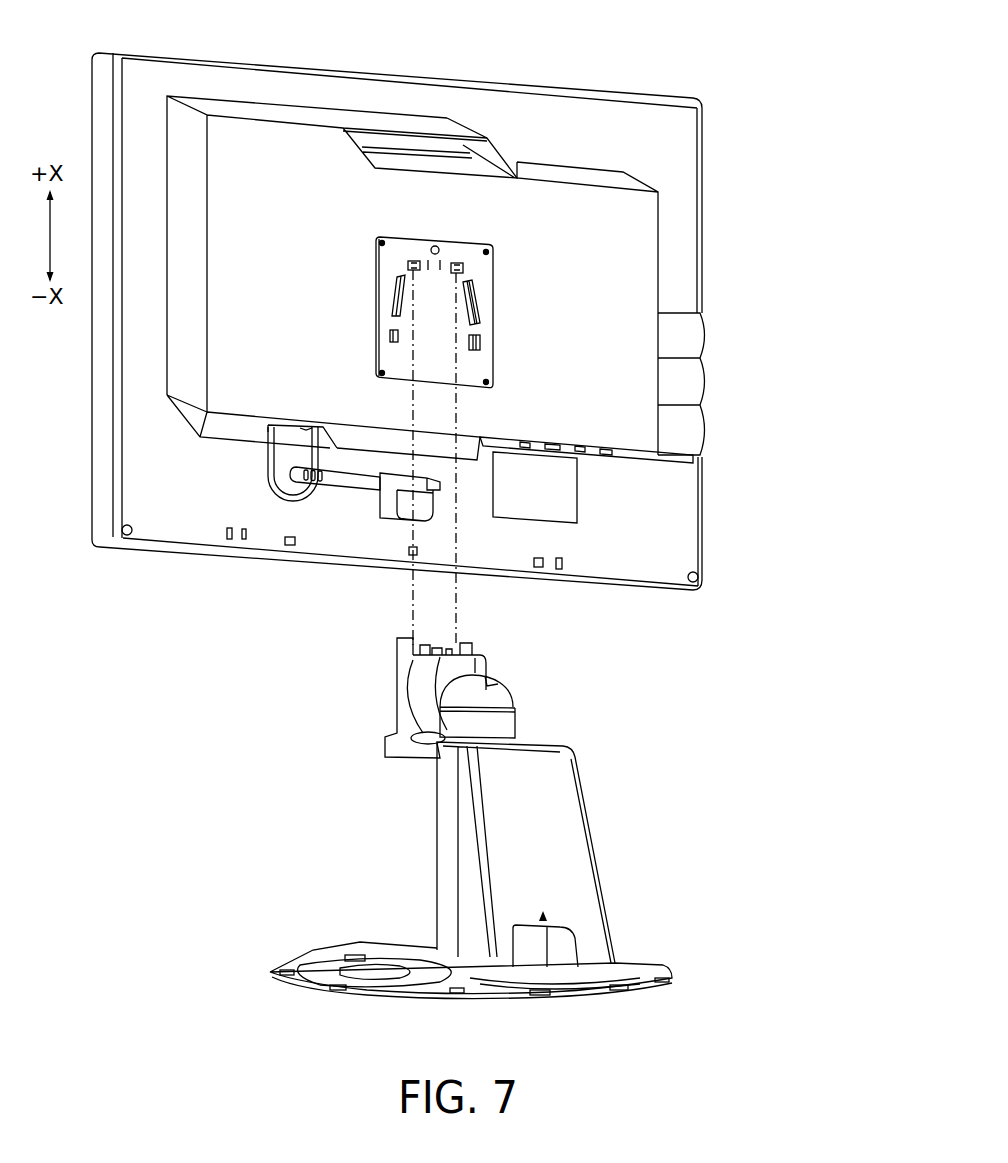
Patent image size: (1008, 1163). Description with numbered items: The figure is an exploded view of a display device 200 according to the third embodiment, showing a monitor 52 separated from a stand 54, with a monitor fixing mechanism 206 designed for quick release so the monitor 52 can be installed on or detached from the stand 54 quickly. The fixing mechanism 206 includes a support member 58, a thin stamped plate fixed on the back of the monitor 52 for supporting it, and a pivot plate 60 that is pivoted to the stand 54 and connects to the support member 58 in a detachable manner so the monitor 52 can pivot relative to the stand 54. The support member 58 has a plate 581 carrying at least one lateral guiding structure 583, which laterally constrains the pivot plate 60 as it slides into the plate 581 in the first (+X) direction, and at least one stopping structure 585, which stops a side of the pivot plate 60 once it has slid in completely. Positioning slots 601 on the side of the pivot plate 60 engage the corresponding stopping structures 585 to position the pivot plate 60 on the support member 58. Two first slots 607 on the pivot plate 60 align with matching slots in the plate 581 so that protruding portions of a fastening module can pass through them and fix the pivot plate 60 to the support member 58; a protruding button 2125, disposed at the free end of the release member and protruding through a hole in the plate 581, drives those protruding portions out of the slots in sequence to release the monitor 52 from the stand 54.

The display device 200 is at (774, 831).
The monitor 52 is at (640, 96).
The monitor fixing mechanism 206 is at (832, 297).
The support member 58 is at (774, 165).
The plate 581 is at (488, 367).
The lateral guiding structure 583 is at (478, 293).
The stopping structure 585 is at (465, 267).
The protruding button 2125 is at (437, 246).
The pivot plate 60 is at (522, 695).
The positioning slot 601 is at (404, 634).
The first slot 607 is at (427, 655).
The stand 54 is at (597, 823).